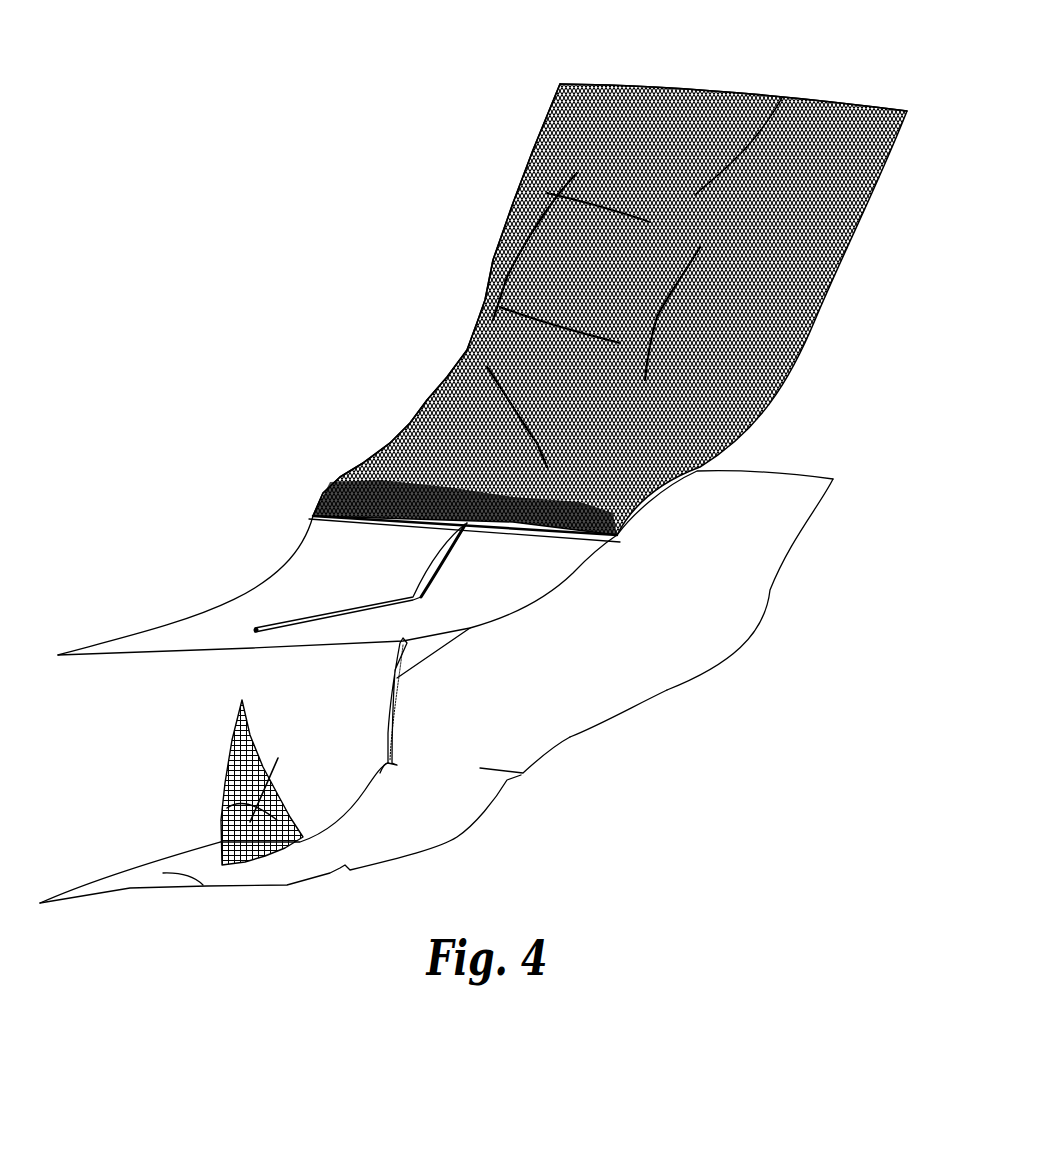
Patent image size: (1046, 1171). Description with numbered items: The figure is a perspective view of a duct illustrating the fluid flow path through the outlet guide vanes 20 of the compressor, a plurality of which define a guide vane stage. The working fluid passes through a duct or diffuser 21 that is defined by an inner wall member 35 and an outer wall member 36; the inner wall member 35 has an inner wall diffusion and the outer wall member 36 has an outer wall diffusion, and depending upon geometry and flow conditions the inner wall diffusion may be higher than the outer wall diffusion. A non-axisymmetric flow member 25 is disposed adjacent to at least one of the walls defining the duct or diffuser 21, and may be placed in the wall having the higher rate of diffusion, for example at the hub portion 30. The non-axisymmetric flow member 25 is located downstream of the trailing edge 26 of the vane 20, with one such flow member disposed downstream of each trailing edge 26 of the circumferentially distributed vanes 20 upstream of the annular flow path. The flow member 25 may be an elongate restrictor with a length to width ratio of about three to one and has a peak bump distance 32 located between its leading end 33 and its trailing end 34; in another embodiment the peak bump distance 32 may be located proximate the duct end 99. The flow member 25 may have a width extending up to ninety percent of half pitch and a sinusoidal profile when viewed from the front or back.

The outlet guide vane 20 is at (223, 737).
The duct or diffuser 21 is at (763, 610).
The non-axisymmetric flow member 25 is at (547, 193).
The trailing edge 26 is at (397, 700).
The hub portion 30 is at (667, 690).
The peak bump distance 32 is at (492, 288).
The leading end 33 is at (470, 352).
The trailing end 34 is at (783, 96).
The inner wall member 35 is at (598, 727).
The outer wall member 36 is at (327, 488).
The duct end 99 is at (866, 102).